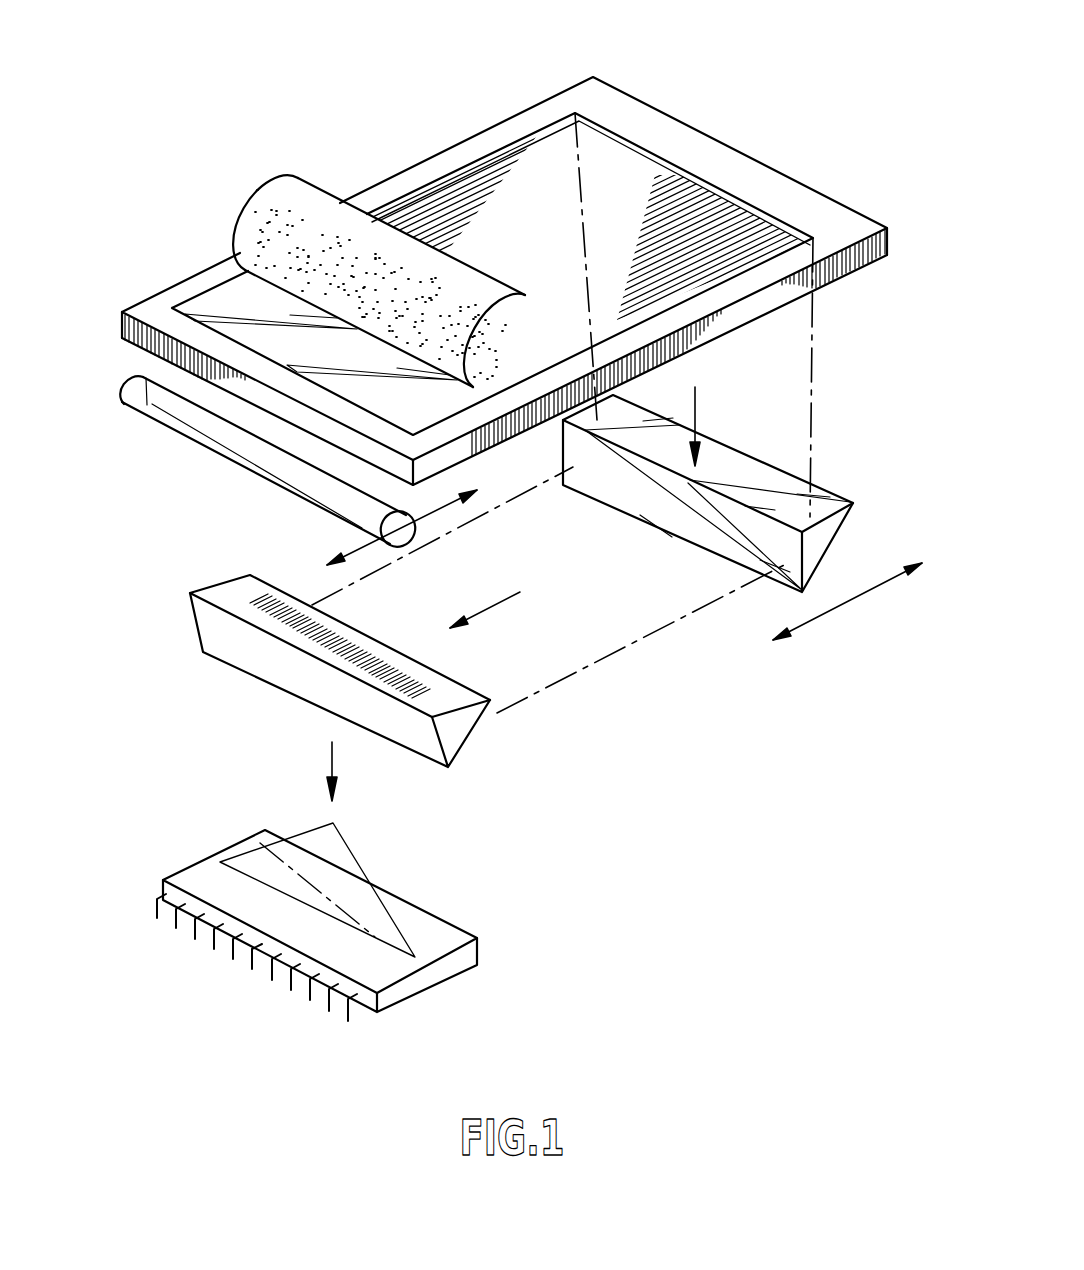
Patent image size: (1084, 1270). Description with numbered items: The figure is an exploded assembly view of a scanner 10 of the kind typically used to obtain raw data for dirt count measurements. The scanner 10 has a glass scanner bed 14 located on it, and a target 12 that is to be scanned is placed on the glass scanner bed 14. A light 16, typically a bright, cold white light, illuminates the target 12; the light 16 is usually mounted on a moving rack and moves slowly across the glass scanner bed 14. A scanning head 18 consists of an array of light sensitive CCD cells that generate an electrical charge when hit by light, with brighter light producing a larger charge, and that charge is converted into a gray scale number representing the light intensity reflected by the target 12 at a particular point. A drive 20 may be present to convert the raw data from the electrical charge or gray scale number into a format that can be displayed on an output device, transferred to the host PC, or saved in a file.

The scanner 10 is at (209, 106).
The target 12 is at (328, 212).
The glass scanner bed 14 is at (783, 197).
The light 16 is at (207, 437).
The scanning head 18 is at (253, 647).
The drive 20 is at (447, 945).